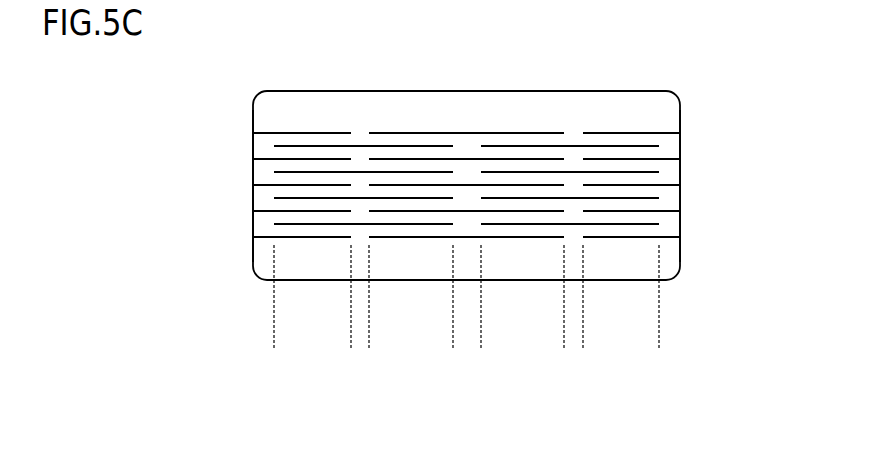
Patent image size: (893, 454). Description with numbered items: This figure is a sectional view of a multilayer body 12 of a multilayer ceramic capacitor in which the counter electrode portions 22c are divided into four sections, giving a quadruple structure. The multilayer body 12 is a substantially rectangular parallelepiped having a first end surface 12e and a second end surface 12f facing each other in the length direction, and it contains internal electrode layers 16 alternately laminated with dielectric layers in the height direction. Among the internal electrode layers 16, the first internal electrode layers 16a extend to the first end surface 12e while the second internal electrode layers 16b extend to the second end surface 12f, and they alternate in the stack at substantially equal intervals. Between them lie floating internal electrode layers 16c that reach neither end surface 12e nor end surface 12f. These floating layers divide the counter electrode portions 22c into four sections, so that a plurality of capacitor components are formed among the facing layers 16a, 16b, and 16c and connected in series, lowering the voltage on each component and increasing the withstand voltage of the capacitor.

The multilayer body 12 is at (245, 59).
The internal electrode layers 16 is at (623, 116).
The first internal electrode layers 16a is at (255, 186).
The second internal electrode layers 16b is at (672, 185).
The floating internal electrode layers 16c is at (493, 235).
The first end surface 12e is at (253, 202).
The second end surface 12f is at (680, 205).
The counter electrode portions 22c is at (342, 349).